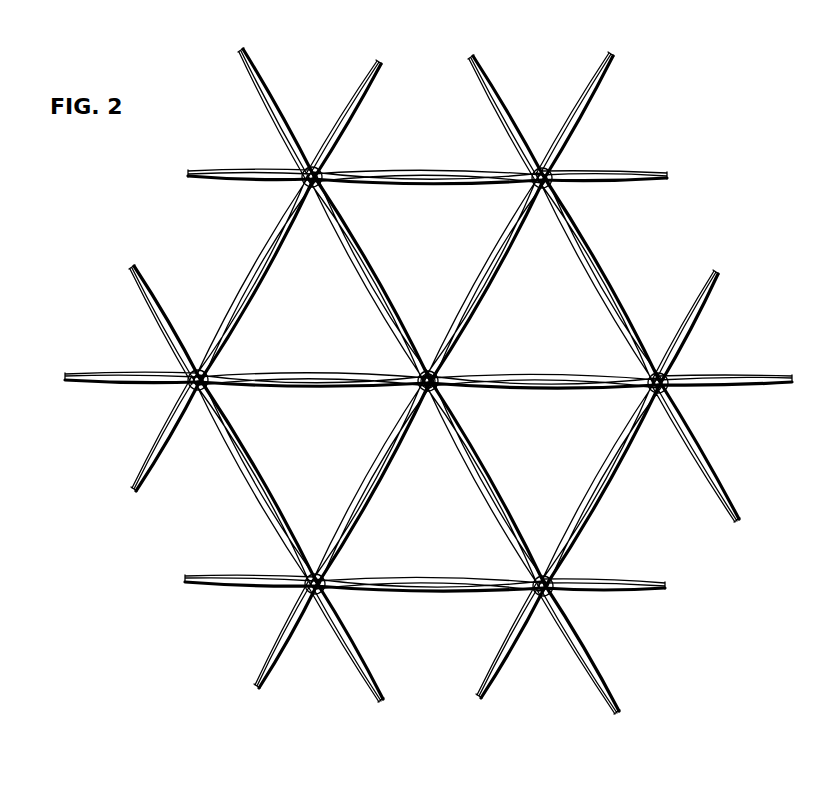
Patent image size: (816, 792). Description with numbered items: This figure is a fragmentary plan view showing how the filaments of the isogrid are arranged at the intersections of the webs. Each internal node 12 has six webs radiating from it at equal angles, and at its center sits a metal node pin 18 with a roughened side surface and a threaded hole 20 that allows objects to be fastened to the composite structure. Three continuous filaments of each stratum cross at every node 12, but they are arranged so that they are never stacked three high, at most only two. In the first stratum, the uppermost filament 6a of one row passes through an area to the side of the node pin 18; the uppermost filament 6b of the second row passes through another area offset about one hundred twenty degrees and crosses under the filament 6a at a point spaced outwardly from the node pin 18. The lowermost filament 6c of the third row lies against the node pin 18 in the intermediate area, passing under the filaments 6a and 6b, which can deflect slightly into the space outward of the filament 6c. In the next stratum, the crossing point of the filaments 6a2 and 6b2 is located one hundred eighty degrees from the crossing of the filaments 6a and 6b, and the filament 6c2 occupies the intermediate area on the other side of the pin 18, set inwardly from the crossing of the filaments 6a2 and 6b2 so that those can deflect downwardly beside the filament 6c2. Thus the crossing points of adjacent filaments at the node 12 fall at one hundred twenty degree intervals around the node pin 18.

The node 12 is at (428, 338).
The node pin 18 is at (430, 395).
The threaded hole 20 is at (412, 373).
The uppermost filament 6a is at (469, 333).
The uppermost filament 6b is at (487, 375).
The lowermost filament 6c is at (472, 446).
The filament 6a2 is at (396, 425).
The filament 6b2 is at (383, 390).
The filament 6c2 is at (397, 339).